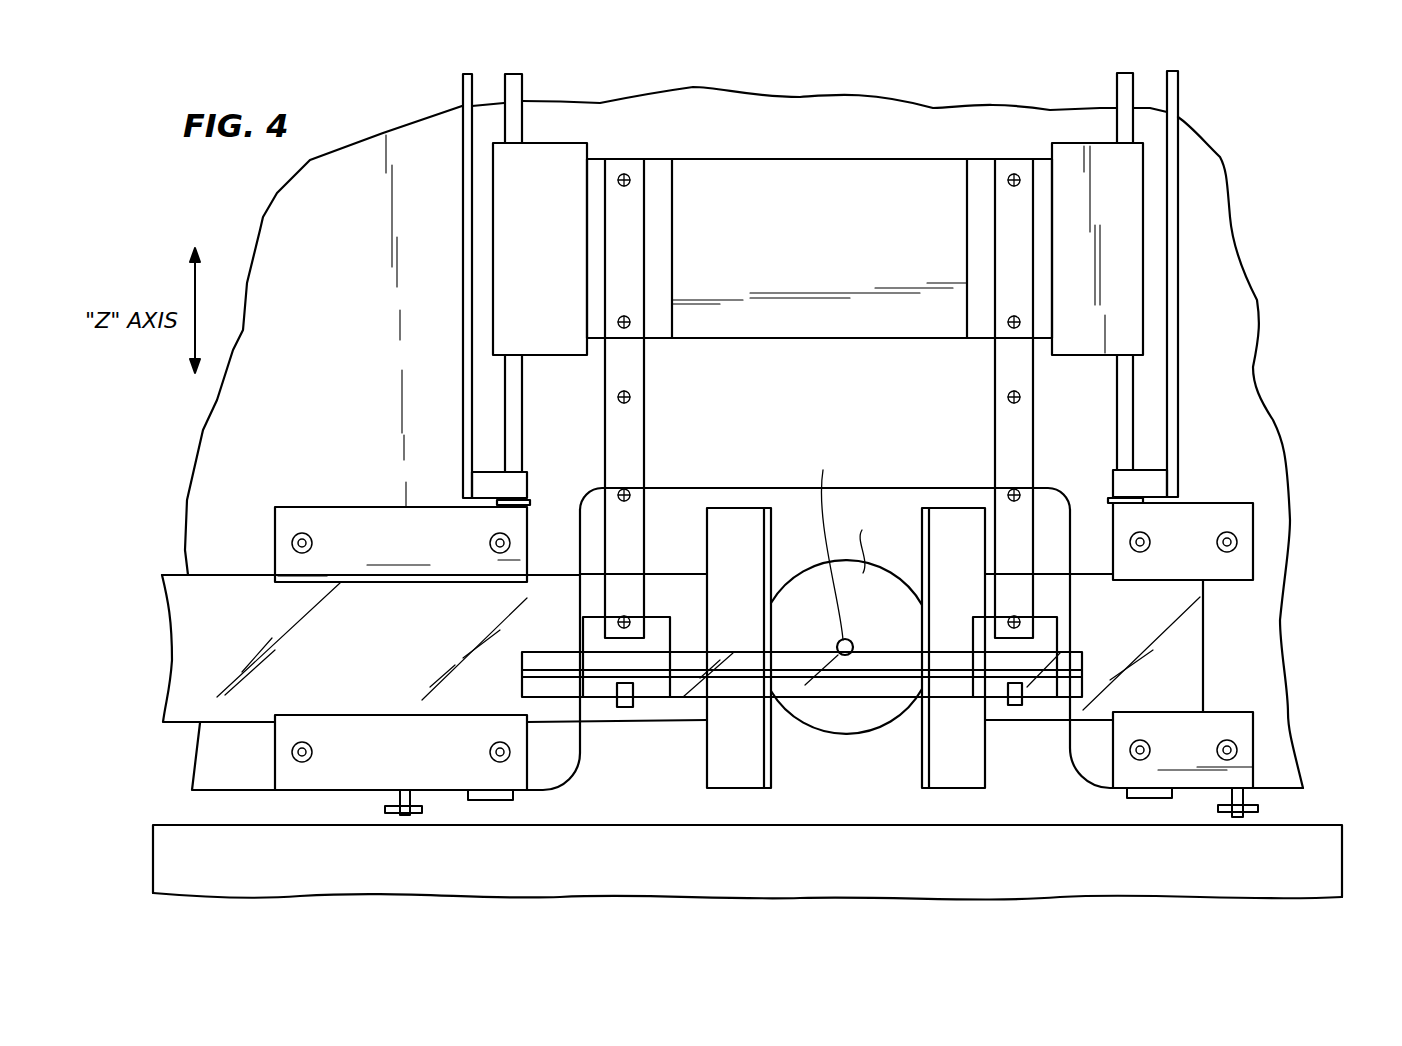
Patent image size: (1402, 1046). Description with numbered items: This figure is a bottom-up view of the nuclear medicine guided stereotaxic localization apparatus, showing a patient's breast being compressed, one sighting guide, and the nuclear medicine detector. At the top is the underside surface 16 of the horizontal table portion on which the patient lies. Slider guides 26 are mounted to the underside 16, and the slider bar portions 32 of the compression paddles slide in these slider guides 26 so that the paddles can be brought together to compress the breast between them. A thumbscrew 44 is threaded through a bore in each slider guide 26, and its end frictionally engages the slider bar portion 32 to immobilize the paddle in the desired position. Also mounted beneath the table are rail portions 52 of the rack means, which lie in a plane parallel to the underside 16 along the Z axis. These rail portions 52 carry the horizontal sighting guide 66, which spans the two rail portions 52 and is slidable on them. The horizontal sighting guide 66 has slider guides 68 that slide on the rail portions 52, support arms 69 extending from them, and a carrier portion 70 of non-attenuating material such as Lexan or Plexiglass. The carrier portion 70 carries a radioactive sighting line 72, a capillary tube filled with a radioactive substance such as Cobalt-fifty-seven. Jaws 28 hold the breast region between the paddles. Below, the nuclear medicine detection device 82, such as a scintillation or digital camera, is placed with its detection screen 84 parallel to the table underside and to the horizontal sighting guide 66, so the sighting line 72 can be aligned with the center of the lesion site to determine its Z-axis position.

The underside surface 16 is at (1200, 210).
The slider guide 26 is at (287, 527).
The jaw 28 is at (767, 530).
The slider bar portion 32 is at (293, 672).
The thumbscrew 44 is at (383, 808).
The rail portion 52 is at (512, 120).
The horizontal sighting guide 66 is at (893, 704).
The slider guide 68 is at (560, 170).
The support arm 69 is at (628, 370).
The carrier portion 70 is at (707, 720).
The radioactive sighting line 72 is at (812, 680).
The nuclear medicine detection device 82 is at (638, 872).
The detection screen 84 is at (700, 823).